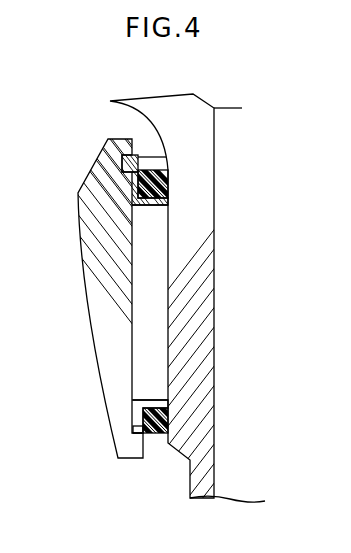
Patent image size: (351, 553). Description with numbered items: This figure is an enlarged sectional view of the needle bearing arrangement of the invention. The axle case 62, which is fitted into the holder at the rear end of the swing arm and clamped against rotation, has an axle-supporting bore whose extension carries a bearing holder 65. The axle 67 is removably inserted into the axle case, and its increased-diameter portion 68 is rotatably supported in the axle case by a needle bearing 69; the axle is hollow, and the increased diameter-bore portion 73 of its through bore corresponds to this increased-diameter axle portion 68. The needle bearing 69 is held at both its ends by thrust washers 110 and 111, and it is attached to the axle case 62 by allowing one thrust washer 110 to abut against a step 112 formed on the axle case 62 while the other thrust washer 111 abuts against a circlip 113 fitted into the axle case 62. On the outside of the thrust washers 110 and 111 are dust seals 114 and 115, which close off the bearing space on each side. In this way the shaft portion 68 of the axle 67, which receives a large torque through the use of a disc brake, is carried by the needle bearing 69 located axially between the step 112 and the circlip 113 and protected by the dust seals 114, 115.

The axle case 62 is at (105, 227).
The bearing holder 65 is at (137, 342).
The axle 67 is at (182, 476).
The increased-diameter portion 68 is at (185, 283).
The needle bearing 69 is at (153, 320).
The increased diameter-bore portion 73 is at (218, 132).
The thrust washer 110 is at (132, 415).
The thrust washer 111 is at (130, 190).
The step 112 is at (132, 430).
The circlip 113 is at (125, 160).
The dust seal 114 is at (167, 417).
The dust seal 115 is at (167, 183).